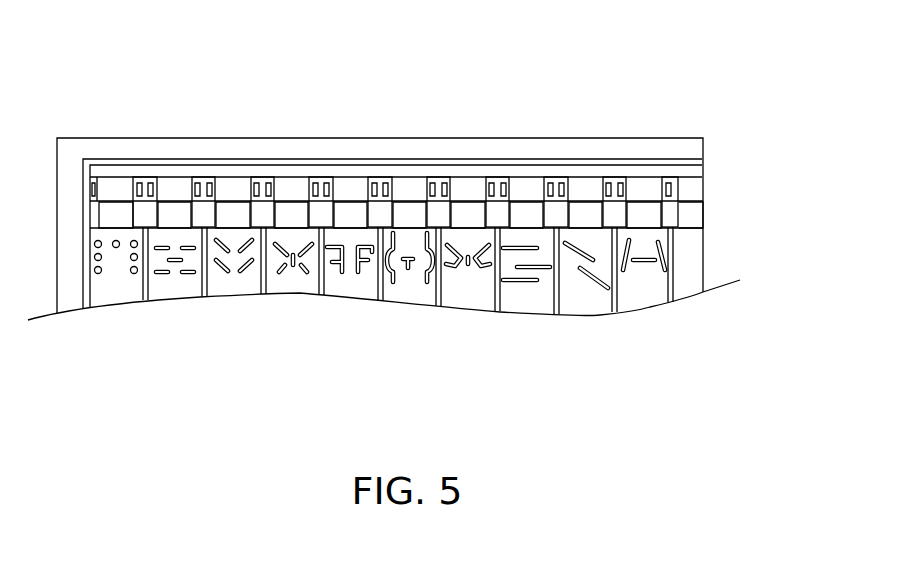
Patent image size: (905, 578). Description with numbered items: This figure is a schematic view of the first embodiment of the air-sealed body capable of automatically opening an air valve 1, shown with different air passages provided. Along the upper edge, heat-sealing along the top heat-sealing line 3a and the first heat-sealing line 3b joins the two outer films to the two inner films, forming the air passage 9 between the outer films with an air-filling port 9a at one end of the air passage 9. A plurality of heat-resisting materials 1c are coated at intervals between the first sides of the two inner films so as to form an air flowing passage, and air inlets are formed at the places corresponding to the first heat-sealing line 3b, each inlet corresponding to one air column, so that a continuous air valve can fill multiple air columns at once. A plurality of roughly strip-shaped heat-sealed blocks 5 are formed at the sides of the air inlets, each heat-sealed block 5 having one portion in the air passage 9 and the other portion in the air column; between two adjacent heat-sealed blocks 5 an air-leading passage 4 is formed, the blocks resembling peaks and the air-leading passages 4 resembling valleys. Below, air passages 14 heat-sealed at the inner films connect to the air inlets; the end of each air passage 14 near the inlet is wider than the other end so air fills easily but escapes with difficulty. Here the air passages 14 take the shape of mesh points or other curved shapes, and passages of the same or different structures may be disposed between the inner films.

The air-sealed body capable of automatically opening an air valve 1 is at (716, 102).
The heat-resisting material 1c is at (116, 214).
The top heat-sealing line 3a is at (349, 172).
The first heat-sealing line 3b is at (687, 203).
The air-leading passage 4 is at (289, 188).
The heat-sealed block 5 is at (205, 178).
The air passage 9 is at (492, 190).
The air-filling port 9a is at (690, 173).
The air passage 14 is at (118, 272).